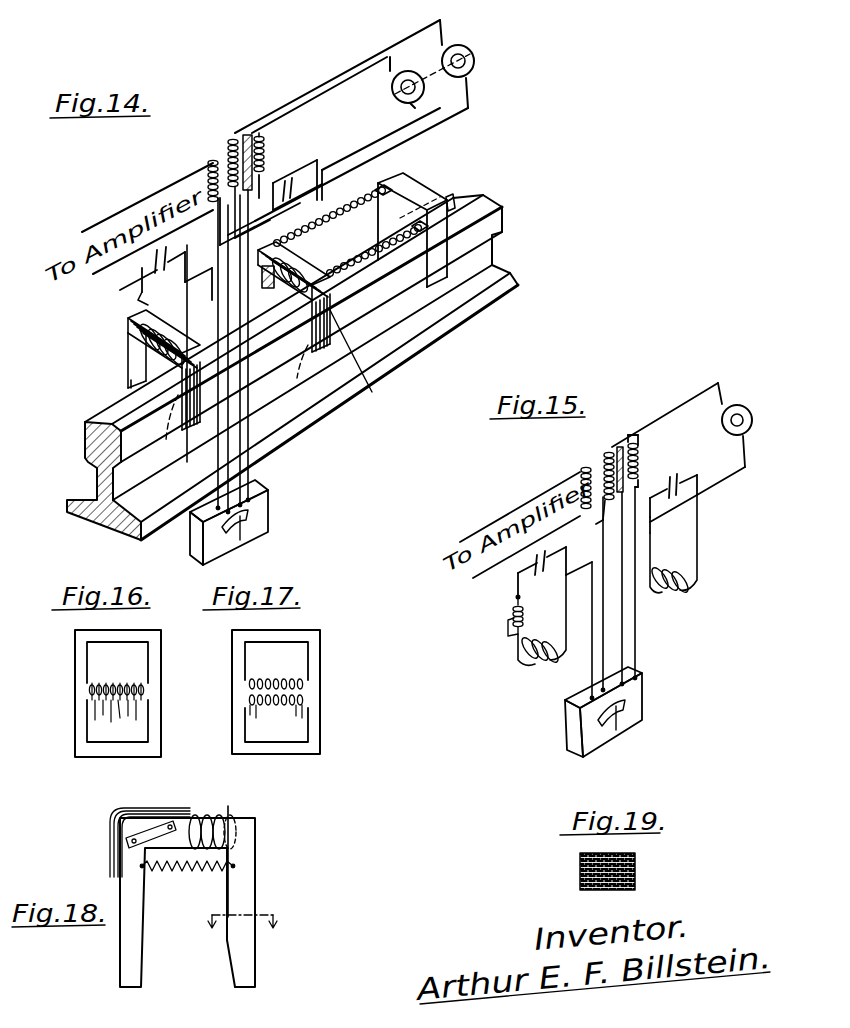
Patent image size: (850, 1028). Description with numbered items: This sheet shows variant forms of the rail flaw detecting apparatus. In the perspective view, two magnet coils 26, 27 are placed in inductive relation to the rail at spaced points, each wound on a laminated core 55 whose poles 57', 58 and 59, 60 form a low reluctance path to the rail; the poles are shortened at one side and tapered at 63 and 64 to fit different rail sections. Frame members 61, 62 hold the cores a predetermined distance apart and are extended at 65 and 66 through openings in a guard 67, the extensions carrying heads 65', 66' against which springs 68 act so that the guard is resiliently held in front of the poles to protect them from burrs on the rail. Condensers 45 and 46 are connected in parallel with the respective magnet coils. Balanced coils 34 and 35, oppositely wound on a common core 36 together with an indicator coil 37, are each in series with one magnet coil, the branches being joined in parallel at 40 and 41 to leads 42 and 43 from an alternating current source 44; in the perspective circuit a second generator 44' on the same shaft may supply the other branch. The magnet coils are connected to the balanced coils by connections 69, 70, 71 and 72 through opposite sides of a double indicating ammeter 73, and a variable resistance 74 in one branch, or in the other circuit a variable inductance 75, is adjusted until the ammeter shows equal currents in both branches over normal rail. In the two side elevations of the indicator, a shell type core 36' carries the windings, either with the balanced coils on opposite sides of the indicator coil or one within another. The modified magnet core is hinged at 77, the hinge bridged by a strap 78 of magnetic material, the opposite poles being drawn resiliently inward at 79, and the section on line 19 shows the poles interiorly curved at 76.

In FIG. 18, the section line 19 is at (190, 943).
In FIG. 14, the magnet coil 26 is at (145, 346).
In FIG. 15, the magnet coil 26 is at (528, 660).
In FIG. 14, the magnet coil 27 is at (302, 256).
In FIG. 15, the magnet coil 27 is at (672, 566).
In FIG. 14, the balanced coil 34 is at (226, 142).
In FIG. 15, the balanced coil 34 is at (604, 452).
In FIG. 16, the balanced coil 34 is at (108, 684).
In FIG. 17, the balanced coil 34 is at (262, 704).
In FIG. 14, the balanced coil 35 is at (264, 150).
In FIG. 15, the balanced coil 35 is at (639, 455).
In FIG. 16, the balanced coil 35 is at (126, 684).
In FIG. 17, the balanced coil 35 is at (268, 680).
In FIG. 14, the core 36 is at (232, 306).
In FIG. 15, the core 36 is at (610, 453).
In FIG. 16, the shell type core 36' is at (100, 693).
In FIG. 17, the shell type core 36' is at (258, 692).
In FIG. 14, the indicator coil 37 is at (208, 186).
In FIG. 15, the indicator coil 37 is at (578, 472).
In FIG. 16, the indicator coil 37 is at (115, 708).
In FIG. 17, the indicator coil 37 is at (286, 704).
In FIG. 15, the parallel connection 40 is at (630, 435).
In FIG. 15, the parallel connection 41 is at (700, 495).
In FIG. 14, the lead 42 is at (398, 44).
In FIG. 15, the lead 42 is at (700, 392).
In FIG. 14, the lead 43 is at (440, 108).
In FIG. 15, the lead 43 is at (726, 478).
In FIG. 14, the alternating current source 44 is at (449, 69).
In FIG. 15, the alternating current source 44 is at (741, 409).
In FIG. 14, the generator 44' is at (391, 89).
In FIG. 14, the condenser 45 is at (165, 258).
In FIG. 15, the condenser 45 is at (550, 552).
In FIG. 14, the condenser 46 is at (303, 170).
In FIG. 15, the condenser 46 is at (677, 478).
In FIG. 14, the laminated core 55 is at (128, 324).
In FIG. 14, the pole 57' is at (106, 376).
In FIG. 14, the pole 58 is at (180, 397).
In FIG. 14, the pole 59 is at (272, 292).
In FIG. 14, the pole 60 is at (353, 353).
In FIG. 14, the frame member 61 is at (202, 353).
In FIG. 14, the frame member 62 is at (207, 358).
In FIG. 14, the tapered pole portion 63 is at (128, 388).
In FIG. 18, the tapered pole portion 63 is at (141, 962).
In FIG. 14, the tapered pole portion 64 is at (170, 444).
In FIG. 18, the tapered pole portion 64 is at (232, 962).
In FIG. 14, the frame extension 65 is at (330, 213).
In FIG. 14, the head 65' is at (412, 175).
In FIG. 14, the frame extension 66 is at (374, 243).
In FIG. 14, the head 66' is at (474, 188).
In FIG. 14, the guard 67 is at (422, 192).
In FIG. 14, the spring 68 is at (343, 218).
In FIG. 14, the connection 69 is at (236, 470).
In FIG. 15, the connection 69 is at (600, 656).
In FIG. 14, the connection 70 is at (230, 488).
In FIG. 15, the connection 70 is at (590, 676).
In FIG. 14, the connection 71 is at (242, 432).
In FIG. 15, the connection 71 is at (624, 624).
In FIG. 14, the connection 72 is at (250, 450).
In FIG. 15, the connection 72 is at (637, 648).
In FIG. 14, the double indicating ammeter 73 is at (258, 508).
In FIG. 15, the double indicating ammeter 73 is at (634, 712).
In FIG. 14, the variable resistance 74 is at (140, 298).
In FIG. 15, the variable inductance 75 is at (512, 606).
In FIG. 19, the interiorly curved pole surface 76 is at (579, 872).
In FIG. 18, the hinge 77 is at (160, 812).
In FIG. 18, the strap 78 is at (122, 808).
In FIG. 18, the spring 79 is at (184, 869).